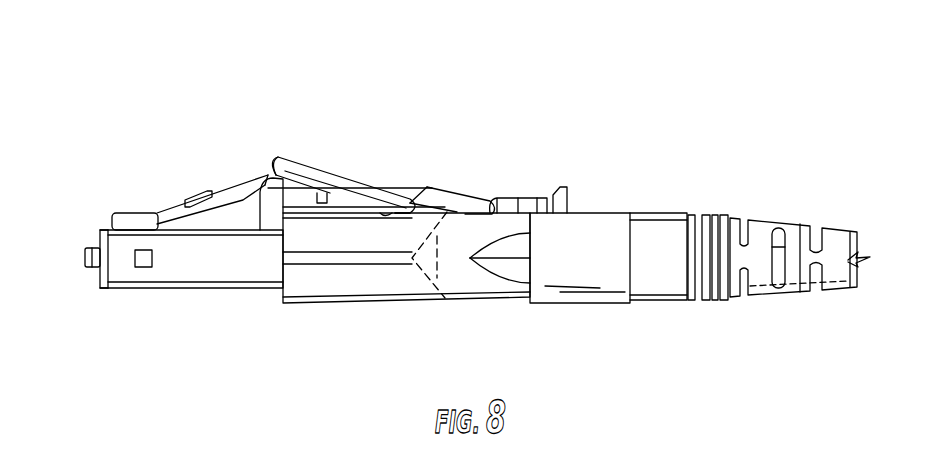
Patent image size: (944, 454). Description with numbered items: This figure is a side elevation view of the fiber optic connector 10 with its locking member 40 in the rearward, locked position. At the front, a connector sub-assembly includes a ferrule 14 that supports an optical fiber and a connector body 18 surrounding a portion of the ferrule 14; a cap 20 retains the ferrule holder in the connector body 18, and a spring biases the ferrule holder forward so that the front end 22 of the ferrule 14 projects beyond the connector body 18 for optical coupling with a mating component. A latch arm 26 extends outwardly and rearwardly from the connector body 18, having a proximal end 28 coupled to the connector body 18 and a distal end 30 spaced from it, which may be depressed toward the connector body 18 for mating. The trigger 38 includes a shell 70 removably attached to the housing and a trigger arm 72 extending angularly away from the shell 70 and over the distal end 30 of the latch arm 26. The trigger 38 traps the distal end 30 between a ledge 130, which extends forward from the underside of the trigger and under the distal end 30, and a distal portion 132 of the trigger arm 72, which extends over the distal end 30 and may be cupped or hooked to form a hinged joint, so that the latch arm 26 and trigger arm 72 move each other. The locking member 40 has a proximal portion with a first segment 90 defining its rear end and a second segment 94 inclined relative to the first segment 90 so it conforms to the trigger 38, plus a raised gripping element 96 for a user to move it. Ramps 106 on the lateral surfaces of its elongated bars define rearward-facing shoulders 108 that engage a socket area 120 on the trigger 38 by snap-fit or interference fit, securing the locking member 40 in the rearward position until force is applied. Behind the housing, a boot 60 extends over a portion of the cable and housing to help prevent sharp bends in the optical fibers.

The fiber optic connector 10 is at (157, 90).
The ferrule 14 is at (95, 272).
The connector body 18 is at (178, 272).
The cap 20 is at (100, 235).
The front end of the ferrule 22 is at (85, 257).
The latch arm 26 is at (203, 184).
The proximal end of the latch arm 28 is at (130, 213).
The distal end of the latch arm 30 is at (266, 172).
The trigger 38 is at (346, 176).
The locking member 40 is at (497, 192).
The boot 60 is at (695, 213).
The shell 70 is at (487, 296).
The trigger arm 72 is at (312, 188).
The first segment 90 is at (526, 198).
The second segment 94 is at (462, 190).
The gripping element 96 is at (558, 188).
The ramps 106 is at (385, 214).
The shoulders 108 is at (398, 214).
The socket area 120 is at (413, 212).
The ledge 130 is at (268, 187).
The distal portion of the trigger arm 132 is at (273, 157).